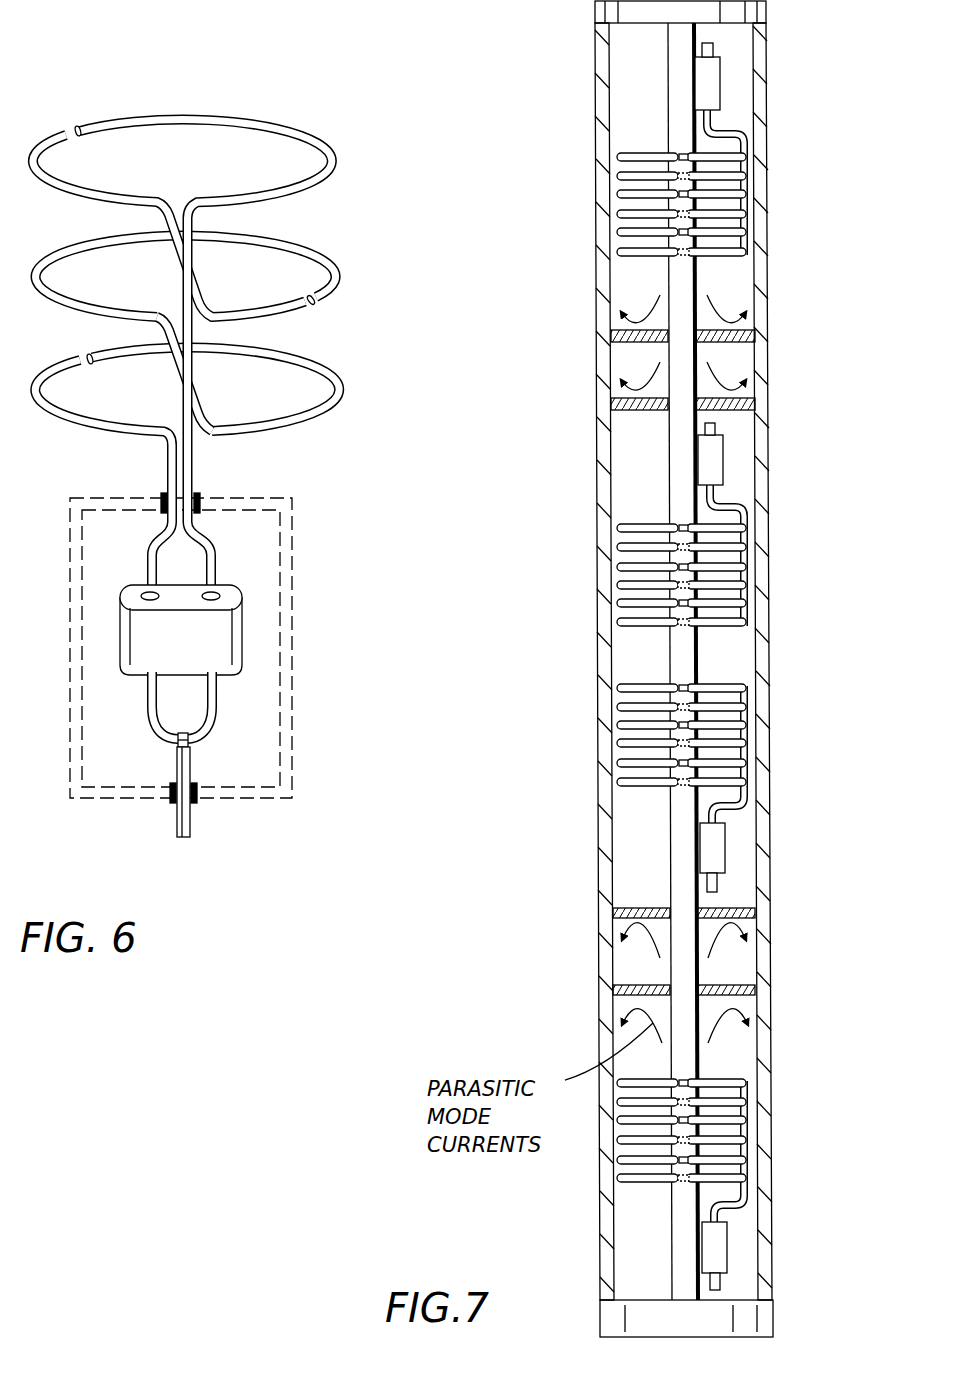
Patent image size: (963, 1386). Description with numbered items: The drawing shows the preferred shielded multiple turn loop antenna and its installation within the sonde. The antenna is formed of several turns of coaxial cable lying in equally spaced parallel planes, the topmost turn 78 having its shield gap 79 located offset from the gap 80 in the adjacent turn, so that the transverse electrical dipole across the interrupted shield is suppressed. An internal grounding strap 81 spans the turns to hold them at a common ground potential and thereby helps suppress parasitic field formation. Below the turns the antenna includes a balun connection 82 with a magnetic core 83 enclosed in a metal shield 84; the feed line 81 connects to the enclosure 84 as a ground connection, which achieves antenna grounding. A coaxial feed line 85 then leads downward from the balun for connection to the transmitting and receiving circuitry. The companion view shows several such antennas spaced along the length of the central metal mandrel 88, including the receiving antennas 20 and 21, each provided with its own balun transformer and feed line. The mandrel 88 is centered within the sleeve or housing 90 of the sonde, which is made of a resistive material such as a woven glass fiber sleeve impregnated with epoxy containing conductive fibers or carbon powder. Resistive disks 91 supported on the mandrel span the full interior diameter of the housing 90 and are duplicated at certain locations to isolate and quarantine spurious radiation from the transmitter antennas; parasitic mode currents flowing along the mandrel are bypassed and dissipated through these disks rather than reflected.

In FIG. 7, the receiving antenna 20 is at (689, 588).
In FIG. 7, the receiving antenna 21 is at (735, 680).
In FIG. 6, the topmost turn 78 is at (216, 358).
In FIG. 6, the gap 79 is at (77, 127).
In FIG. 7, the gap 79 is at (678, 526).
In FIG. 6, the gap 80 is at (313, 306).
In FIG. 7, the gap 80 is at (683, 624).
In FIG. 6, the grounding strap 81 is at (181, 401).
In FIG. 6, the balun connection 82 is at (200, 734).
In FIG. 6, the magnetic core 83 is at (240, 603).
In FIG. 6, the metal shield 84 is at (292, 675).
In FIG. 7, the metal shield 84 is at (720, 88).
In FIG. 6, the output tube 85 is at (178, 818).
In FIG. 7, the mandrel 88 is at (699, 277).
In FIG. 7, the housing 90 is at (773, 967).
In FIG. 7, the resistive disk 91 is at (618, 338).